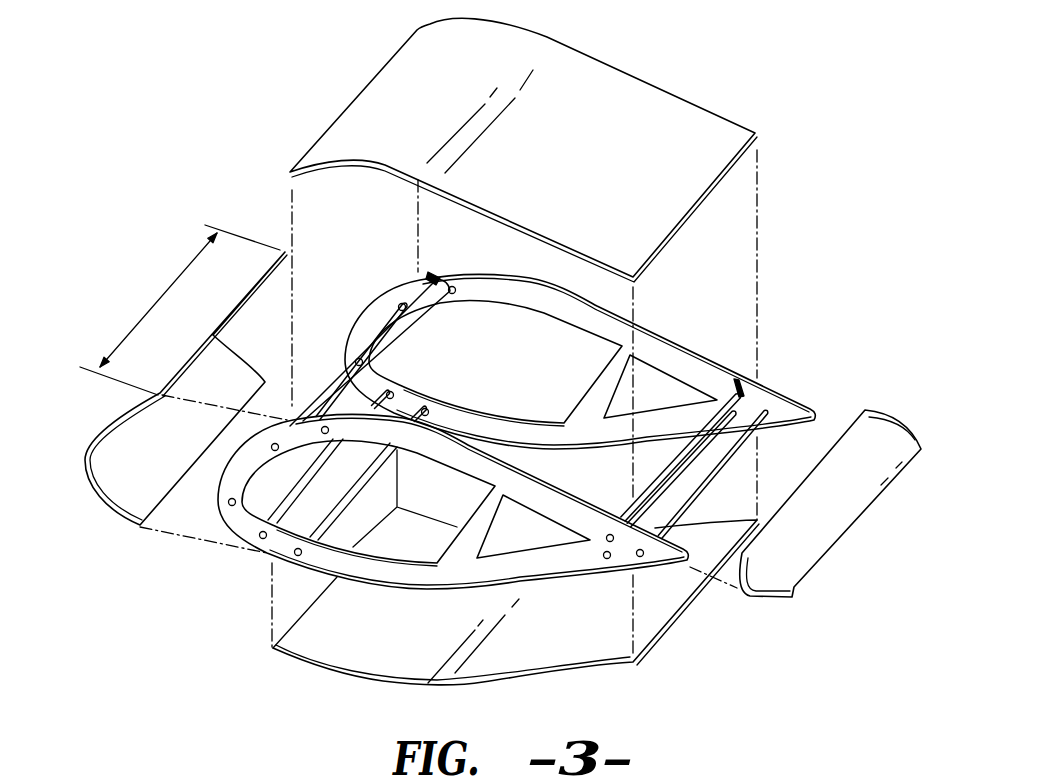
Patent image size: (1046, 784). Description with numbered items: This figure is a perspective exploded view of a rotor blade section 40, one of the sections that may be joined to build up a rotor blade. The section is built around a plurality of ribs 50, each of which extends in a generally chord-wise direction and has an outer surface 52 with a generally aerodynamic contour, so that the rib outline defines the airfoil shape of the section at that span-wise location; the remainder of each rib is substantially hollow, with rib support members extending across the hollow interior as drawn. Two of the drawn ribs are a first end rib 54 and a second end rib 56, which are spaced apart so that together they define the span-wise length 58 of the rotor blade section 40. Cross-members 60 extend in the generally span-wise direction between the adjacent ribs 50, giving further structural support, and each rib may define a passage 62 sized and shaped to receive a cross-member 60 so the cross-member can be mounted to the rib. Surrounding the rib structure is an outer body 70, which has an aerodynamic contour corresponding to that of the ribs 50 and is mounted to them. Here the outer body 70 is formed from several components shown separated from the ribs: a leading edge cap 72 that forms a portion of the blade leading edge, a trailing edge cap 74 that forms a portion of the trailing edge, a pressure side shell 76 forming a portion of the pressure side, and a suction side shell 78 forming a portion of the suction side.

The rotor blade section 40 is at (800, 264).
The rib 50 is at (658, 312).
The outer surface 52 is at (690, 350).
The first end rib 54 is at (430, 575).
The second end rib 56 is at (553, 437).
The length 58 is at (160, 297).
The cross-member 60 is at (332, 376).
The passage 62 is at (433, 278).
The outer body 70 is at (338, 66).
The leading edge cap 72 is at (105, 515).
The trailing edge cap 74 is at (808, 587).
The pressure side shell 76 is at (583, 670).
The suction side shell 78 is at (630, 68).